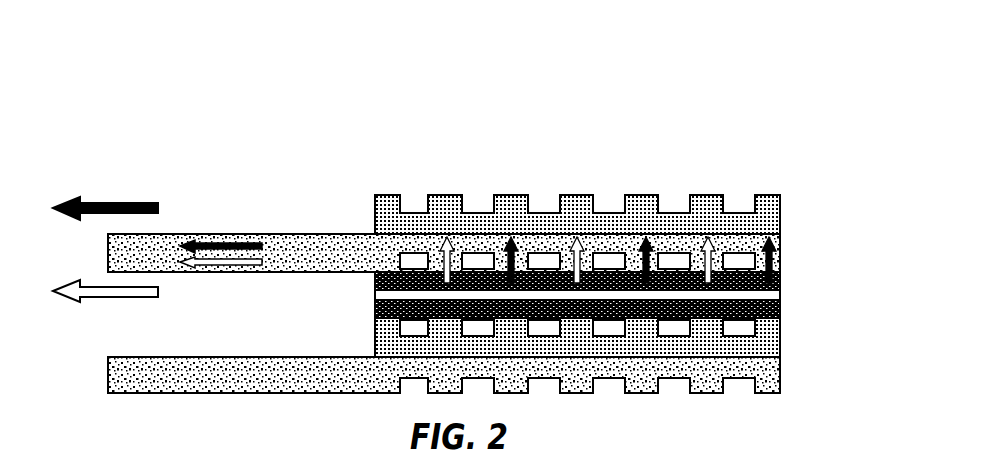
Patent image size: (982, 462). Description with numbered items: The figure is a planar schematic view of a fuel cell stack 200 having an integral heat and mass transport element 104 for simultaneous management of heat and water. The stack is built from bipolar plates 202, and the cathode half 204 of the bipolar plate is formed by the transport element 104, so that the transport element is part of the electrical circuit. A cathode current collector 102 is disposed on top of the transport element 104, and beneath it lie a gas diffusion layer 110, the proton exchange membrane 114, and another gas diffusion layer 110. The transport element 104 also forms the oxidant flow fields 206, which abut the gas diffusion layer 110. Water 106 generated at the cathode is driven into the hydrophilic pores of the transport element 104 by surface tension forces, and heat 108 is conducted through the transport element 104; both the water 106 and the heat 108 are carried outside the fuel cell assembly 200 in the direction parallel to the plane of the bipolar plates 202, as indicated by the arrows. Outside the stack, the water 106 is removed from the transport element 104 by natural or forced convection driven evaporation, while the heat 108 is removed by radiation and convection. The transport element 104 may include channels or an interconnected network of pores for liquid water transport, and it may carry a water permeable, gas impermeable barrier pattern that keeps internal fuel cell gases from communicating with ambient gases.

The fuel cell stack 200 is at (190, 62).
The cathode current collector 102 is at (767, 195).
The heat and mass transport element 104 is at (205, 214).
The water 106 is at (102, 200).
The heat 108 is at (85, 303).
The gas diffusion layer 110 is at (780, 277).
The proton exchange membrane 114 is at (780, 293).
The bipolar plate 202 is at (787, 270).
The cathode half of the bipolar plate 204 is at (362, 234).
The oxidant flow fields 206 is at (733, 245).